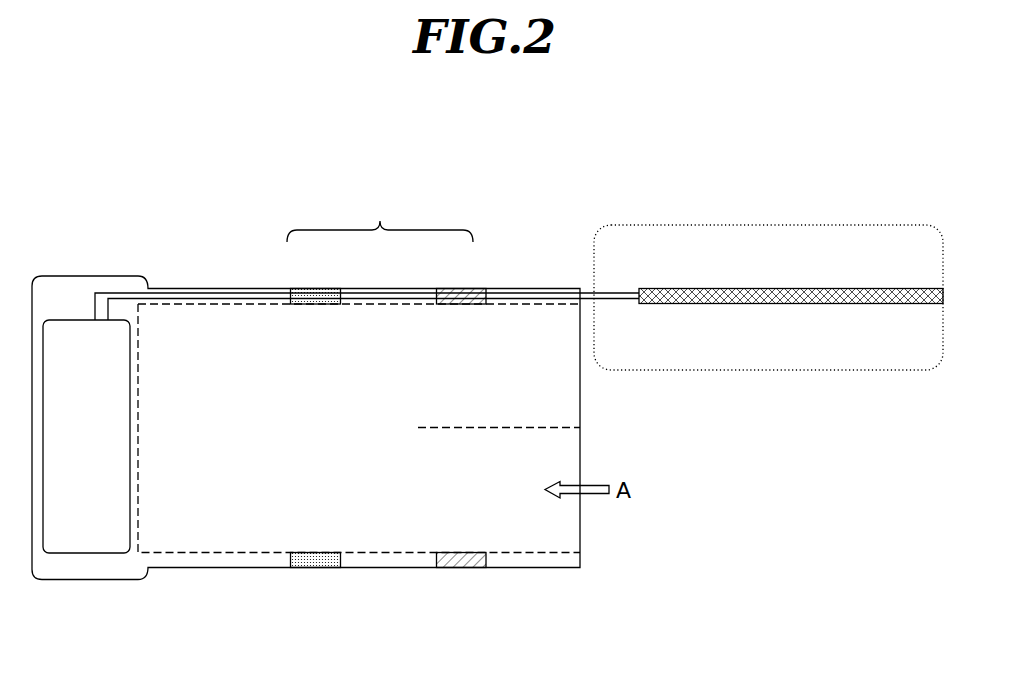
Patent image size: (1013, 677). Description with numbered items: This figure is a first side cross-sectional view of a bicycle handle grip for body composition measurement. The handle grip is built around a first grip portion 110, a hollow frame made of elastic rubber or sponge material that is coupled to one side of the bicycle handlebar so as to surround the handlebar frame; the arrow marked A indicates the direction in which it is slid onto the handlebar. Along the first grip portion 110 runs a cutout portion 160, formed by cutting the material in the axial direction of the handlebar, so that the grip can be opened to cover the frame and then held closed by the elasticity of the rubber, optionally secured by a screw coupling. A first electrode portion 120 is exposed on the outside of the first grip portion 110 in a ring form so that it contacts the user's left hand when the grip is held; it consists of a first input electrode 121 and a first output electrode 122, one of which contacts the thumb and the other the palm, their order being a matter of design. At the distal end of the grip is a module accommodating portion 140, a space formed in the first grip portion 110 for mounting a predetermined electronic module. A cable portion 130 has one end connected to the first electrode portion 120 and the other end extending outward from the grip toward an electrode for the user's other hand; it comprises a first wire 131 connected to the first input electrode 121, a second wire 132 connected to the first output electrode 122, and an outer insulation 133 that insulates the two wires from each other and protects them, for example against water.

The first grip portion 110 is at (218, 288).
The first electrode portion 120 is at (386, 379).
The first input electrode 121 is at (452, 288).
The first output electrode 122 is at (312, 288).
The cable portion 130 is at (760, 225).
The first wire 131 is at (622, 300).
The second wire 132 is at (617, 293).
The outer insulation 133 is at (780, 288).
The module accommodating portion 140 is at (85, 553).
The cutout portion 160 is at (505, 412).